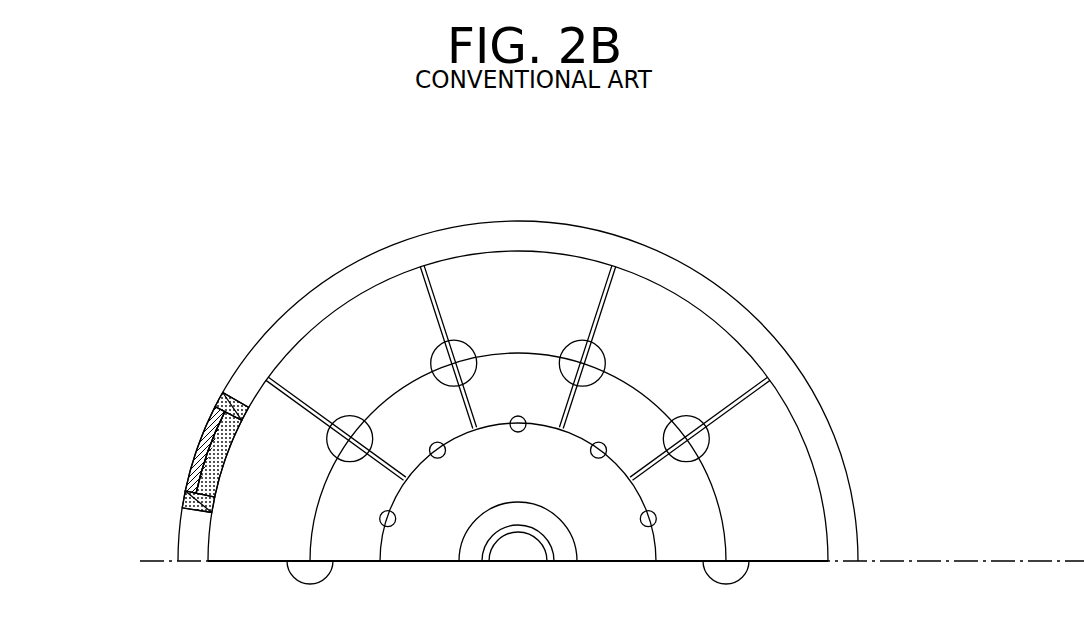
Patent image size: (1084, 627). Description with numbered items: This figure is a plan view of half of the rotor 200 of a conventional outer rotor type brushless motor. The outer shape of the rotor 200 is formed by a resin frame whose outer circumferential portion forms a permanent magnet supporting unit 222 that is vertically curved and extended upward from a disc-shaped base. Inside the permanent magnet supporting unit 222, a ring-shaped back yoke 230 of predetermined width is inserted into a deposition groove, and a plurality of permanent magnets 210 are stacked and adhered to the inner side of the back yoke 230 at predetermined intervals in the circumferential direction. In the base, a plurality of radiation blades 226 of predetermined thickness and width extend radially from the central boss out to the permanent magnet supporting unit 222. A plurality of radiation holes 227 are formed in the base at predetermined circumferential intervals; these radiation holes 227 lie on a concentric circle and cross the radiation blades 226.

The rotor 200 is at (257, 340).
The permanent magnet 210 is at (217, 420).
The permanent magnet supporting unit 222 is at (200, 448).
The radiation blades 226 is at (722, 413).
The radiation holes 227 is at (682, 423).
The back yoke 230 is at (188, 490).